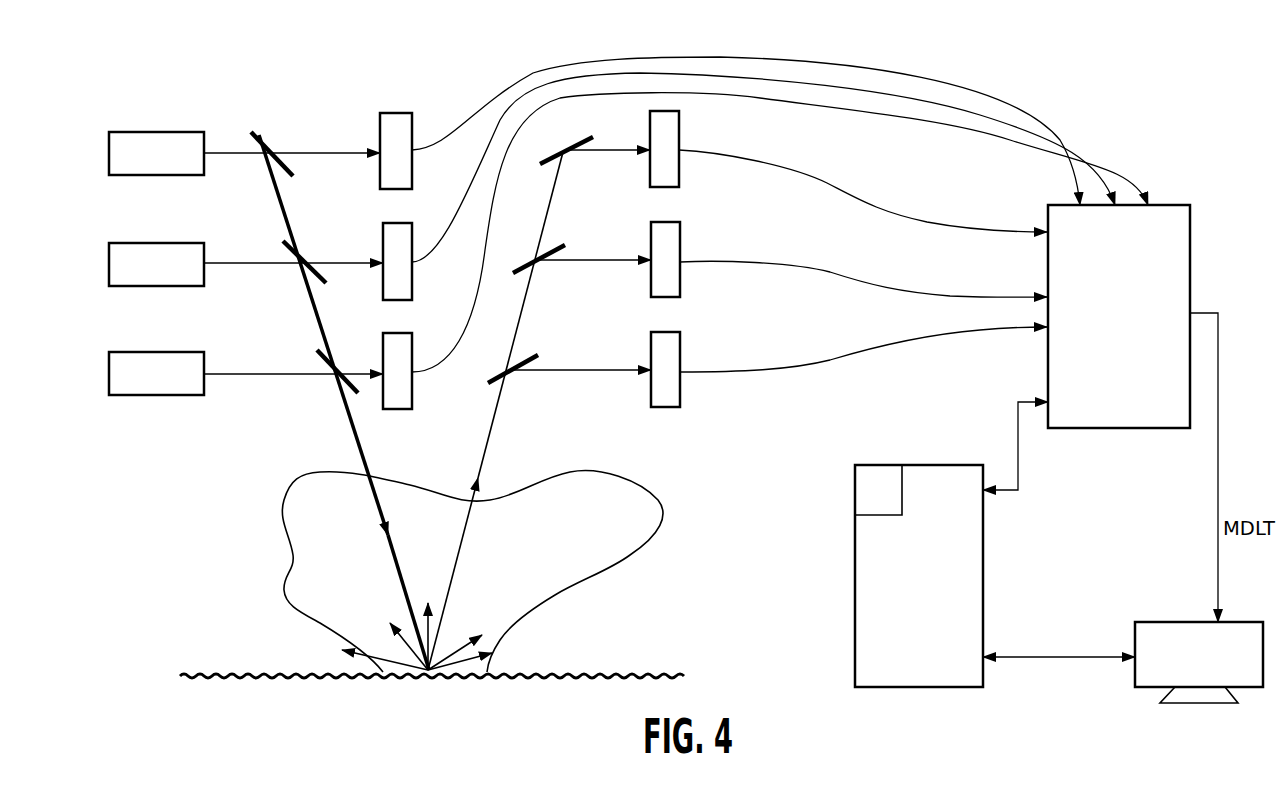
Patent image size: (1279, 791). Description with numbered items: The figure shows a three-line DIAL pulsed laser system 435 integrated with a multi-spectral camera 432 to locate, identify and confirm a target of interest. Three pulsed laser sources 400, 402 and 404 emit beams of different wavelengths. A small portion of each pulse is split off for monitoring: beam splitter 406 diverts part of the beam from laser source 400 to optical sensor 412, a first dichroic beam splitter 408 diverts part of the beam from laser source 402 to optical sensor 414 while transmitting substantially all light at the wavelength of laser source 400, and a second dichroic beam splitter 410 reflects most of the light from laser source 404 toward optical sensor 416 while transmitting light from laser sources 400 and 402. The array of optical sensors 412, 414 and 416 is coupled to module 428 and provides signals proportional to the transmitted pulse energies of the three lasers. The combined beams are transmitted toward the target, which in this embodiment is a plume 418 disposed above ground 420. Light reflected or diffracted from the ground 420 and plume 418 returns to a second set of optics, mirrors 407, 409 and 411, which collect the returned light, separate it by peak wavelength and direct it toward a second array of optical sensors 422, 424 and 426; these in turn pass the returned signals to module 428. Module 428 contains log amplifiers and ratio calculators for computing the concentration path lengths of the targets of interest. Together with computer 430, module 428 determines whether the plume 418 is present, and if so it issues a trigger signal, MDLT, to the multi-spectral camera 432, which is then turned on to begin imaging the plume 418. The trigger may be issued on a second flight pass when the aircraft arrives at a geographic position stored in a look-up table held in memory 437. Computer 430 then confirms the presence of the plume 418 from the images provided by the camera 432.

The pulsed laser source 400 is at (148, 130).
The pulsed laser source 402 is at (152, 288).
The pulsed laser source 404 is at (155, 397).
The beam splitter 406 is at (266, 136).
The mirror 407 is at (545, 160).
The first dichroic beam splitter 408 is at (283, 244).
The mirror 409 is at (518, 270).
The second dichroic beam splitter 410 is at (316, 354).
The mirror 411 is at (490, 382).
The optical sensor 412 is at (413, 115).
The optical sensor 414 is at (382, 224).
The optical sensor 416 is at (412, 340).
The plume 418 is at (291, 556).
The ground 420 is at (561, 672).
The optical sensor 422 is at (680, 126).
The optical sensor 424 is at (680, 229).
The optical sensor 426 is at (680, 345).
The module 428 is at (1192, 240).
The computer 430 is at (855, 642).
The multi-spectral camera 432 is at (1168, 620).
The three-line DIAL pulsed laser system 435 is at (343, 80).
The memory 437 is at (857, 495).